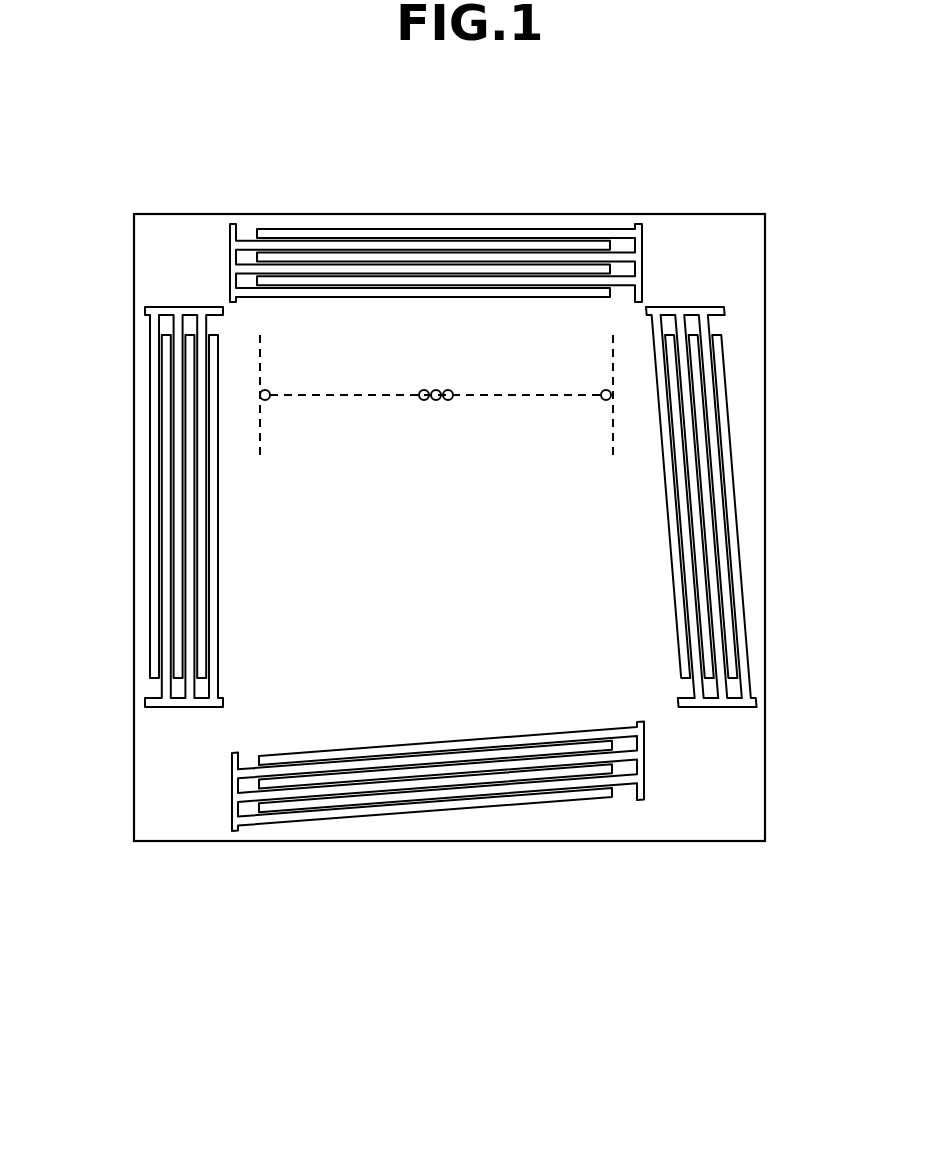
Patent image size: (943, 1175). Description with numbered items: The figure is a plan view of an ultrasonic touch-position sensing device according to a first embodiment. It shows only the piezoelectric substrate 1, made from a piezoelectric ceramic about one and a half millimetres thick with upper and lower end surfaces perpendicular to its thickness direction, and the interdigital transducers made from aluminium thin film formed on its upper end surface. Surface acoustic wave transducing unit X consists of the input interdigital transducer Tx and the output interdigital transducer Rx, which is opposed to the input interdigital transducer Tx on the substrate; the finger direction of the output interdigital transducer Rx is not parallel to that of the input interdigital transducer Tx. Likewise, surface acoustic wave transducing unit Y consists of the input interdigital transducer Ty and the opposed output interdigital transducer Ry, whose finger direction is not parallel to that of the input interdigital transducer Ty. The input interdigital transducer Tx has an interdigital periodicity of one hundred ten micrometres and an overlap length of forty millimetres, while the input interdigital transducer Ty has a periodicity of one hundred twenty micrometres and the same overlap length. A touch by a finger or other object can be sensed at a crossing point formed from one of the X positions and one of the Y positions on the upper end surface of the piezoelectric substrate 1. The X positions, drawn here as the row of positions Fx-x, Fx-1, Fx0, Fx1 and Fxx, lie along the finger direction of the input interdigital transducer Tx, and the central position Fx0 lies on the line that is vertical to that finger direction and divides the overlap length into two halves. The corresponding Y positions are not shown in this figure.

The piezoelectric substrate 1 is at (187, 820).
The input interdigital transducer Tx is at (385, 229).
The input interdigital transducer Ty is at (152, 548).
The output interdigital transducer Rx is at (520, 806).
The output interdigital transducer Ry is at (727, 405).
The position Fx-x is at (268, 390).
The position Fx-1 is at (421, 400).
The position Fx0 is at (435, 389).
The position Fx1 is at (449, 401).
The position Fxx is at (601, 393).